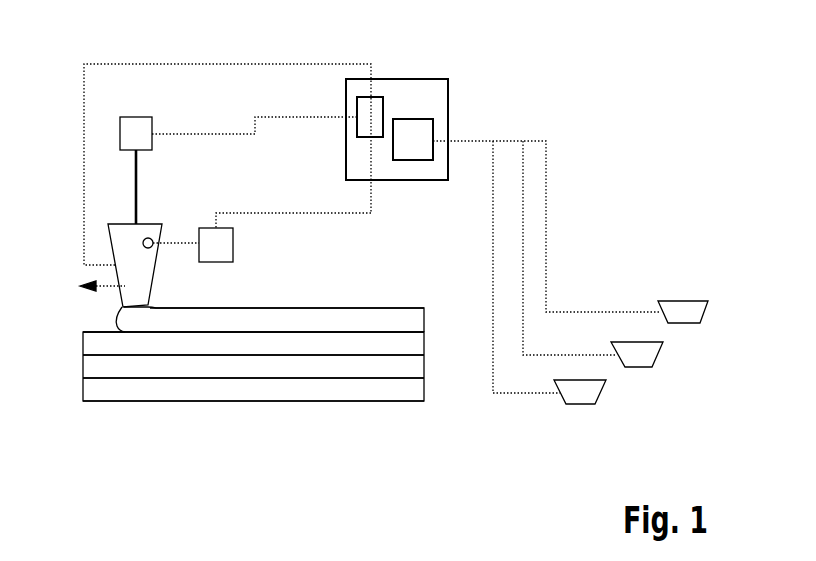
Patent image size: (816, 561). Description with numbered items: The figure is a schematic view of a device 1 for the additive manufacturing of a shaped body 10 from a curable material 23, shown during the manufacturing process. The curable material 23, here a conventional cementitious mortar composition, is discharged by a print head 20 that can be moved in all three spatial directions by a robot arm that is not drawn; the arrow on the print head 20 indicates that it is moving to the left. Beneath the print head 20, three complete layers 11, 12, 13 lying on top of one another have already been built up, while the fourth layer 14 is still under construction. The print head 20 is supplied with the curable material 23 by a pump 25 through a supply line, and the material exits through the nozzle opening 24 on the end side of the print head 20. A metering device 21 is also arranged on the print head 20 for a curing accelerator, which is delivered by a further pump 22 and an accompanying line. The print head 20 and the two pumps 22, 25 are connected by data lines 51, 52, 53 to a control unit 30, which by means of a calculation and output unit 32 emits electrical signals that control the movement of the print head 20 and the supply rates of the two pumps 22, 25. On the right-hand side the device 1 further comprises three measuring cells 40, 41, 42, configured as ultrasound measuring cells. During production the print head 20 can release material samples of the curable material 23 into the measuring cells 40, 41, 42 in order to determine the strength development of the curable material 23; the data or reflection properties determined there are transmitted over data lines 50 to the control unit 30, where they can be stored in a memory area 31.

The device 1 is at (624, 64).
The shaped body 10 is at (416, 411).
The first layer 11 is at (365, 385).
The second layer 12 is at (313, 369).
The third layer 13 is at (257, 343).
The fourth layer 14 is at (190, 320).
The print head 20 is at (124, 236).
The metering device 21 is at (151, 237).
The further pump 22 is at (235, 243).
The curable material 23 is at (132, 318).
The nozzle opening 24 is at (153, 304).
The pump 25 is at (154, 119).
The control unit 30 is at (450, 100).
The memory area 31 is at (417, 126).
The calculation and output unit 32 is at (375, 94).
The measuring cell 40 is at (694, 307).
The measuring cell 41 is at (650, 352).
The measuring cell 42 is at (595, 390).
The data lines 50 is at (493, 175).
The data line 51 is at (82, 134).
The data line 52 is at (312, 213).
The data line 53 is at (270, 117).